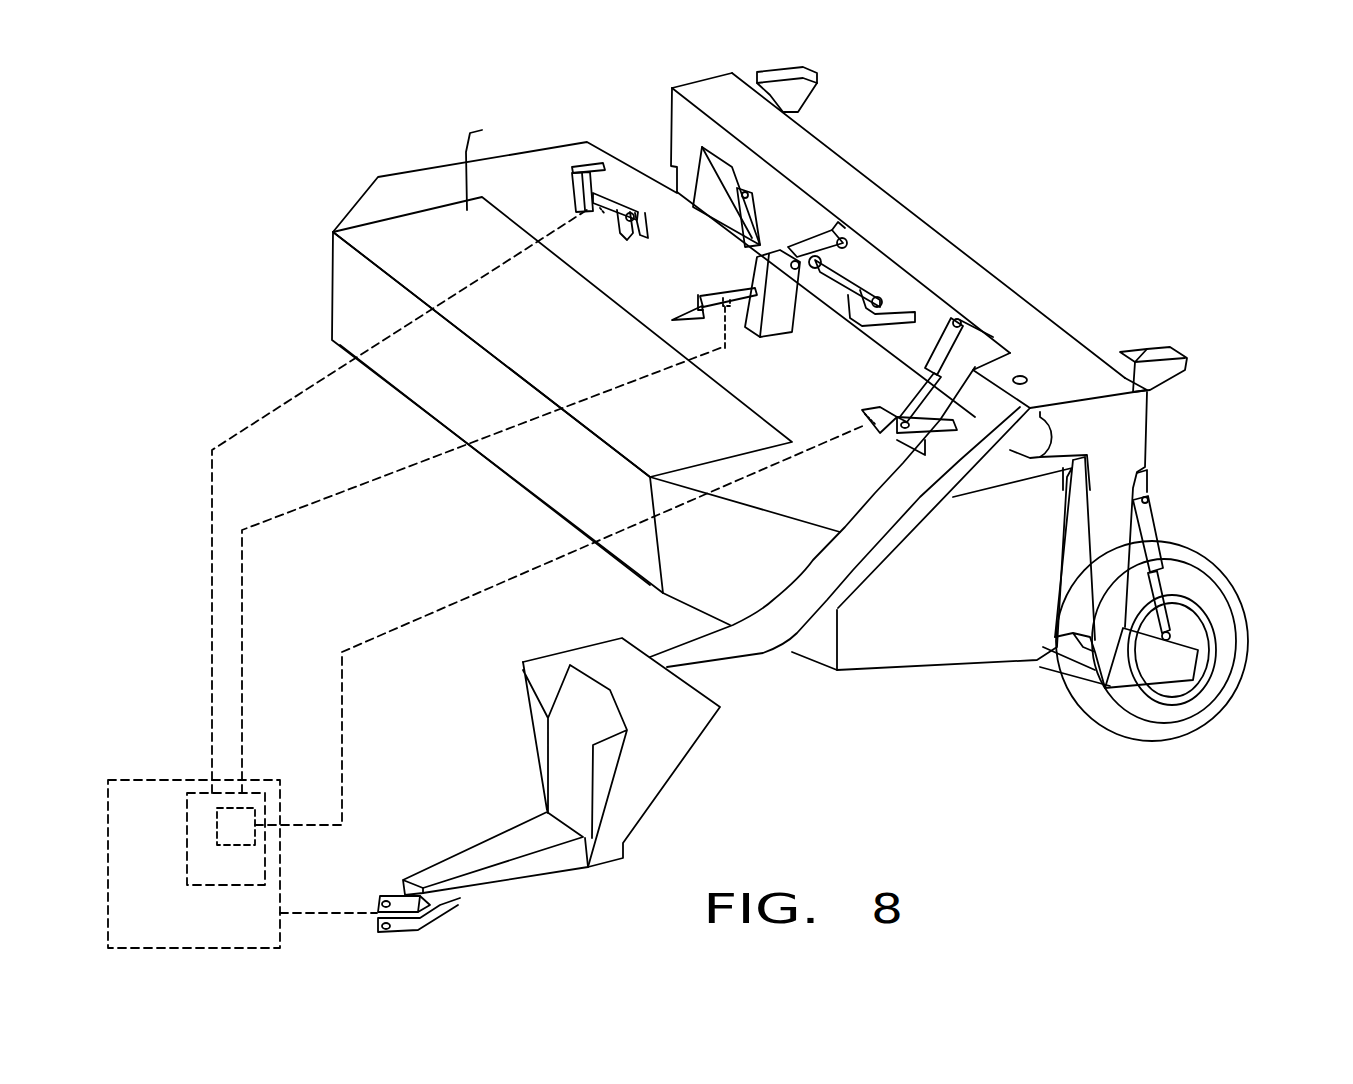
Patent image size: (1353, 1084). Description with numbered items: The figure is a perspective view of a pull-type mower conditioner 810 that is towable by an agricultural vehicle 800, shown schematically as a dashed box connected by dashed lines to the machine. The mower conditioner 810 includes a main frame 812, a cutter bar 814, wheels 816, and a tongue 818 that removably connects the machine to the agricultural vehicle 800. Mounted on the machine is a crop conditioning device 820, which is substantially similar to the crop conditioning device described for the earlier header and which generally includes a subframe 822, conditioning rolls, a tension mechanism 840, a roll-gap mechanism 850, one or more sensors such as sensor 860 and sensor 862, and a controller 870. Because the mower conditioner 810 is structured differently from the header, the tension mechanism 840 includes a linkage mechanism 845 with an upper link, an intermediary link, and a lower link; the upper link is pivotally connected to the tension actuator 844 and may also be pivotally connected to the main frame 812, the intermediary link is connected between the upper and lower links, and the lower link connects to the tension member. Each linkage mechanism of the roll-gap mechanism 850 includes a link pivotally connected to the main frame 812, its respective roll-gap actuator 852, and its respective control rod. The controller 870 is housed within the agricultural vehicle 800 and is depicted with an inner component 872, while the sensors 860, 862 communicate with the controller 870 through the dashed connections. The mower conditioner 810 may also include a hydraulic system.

The agricultural vehicle 800 is at (178, 780).
The pull-type mower conditioner 810 is at (408, 167).
The main frame 812 is at (493, 163).
The cutter bar 814 is at (497, 483).
The wheels 816 is at (1212, 705).
The tongue 818 is at (725, 673).
The crop conditioning device 820 is at (890, 308).
The subframe 822 is at (907, 343).
The tension mechanism 840 is at (797, 240).
The tension actuator 844 is at (710, 293).
The linkage mechanism 845 is at (850, 227).
The roll-gap mechanism 850 is at (587, 157).
The roll-gap actuator 852 is at (625, 198).
The sensor 860 is at (732, 312).
The sensor 862 is at (607, 212).
The controller 870 is at (212, 885).
The processor / memory 872 is at (255, 840).